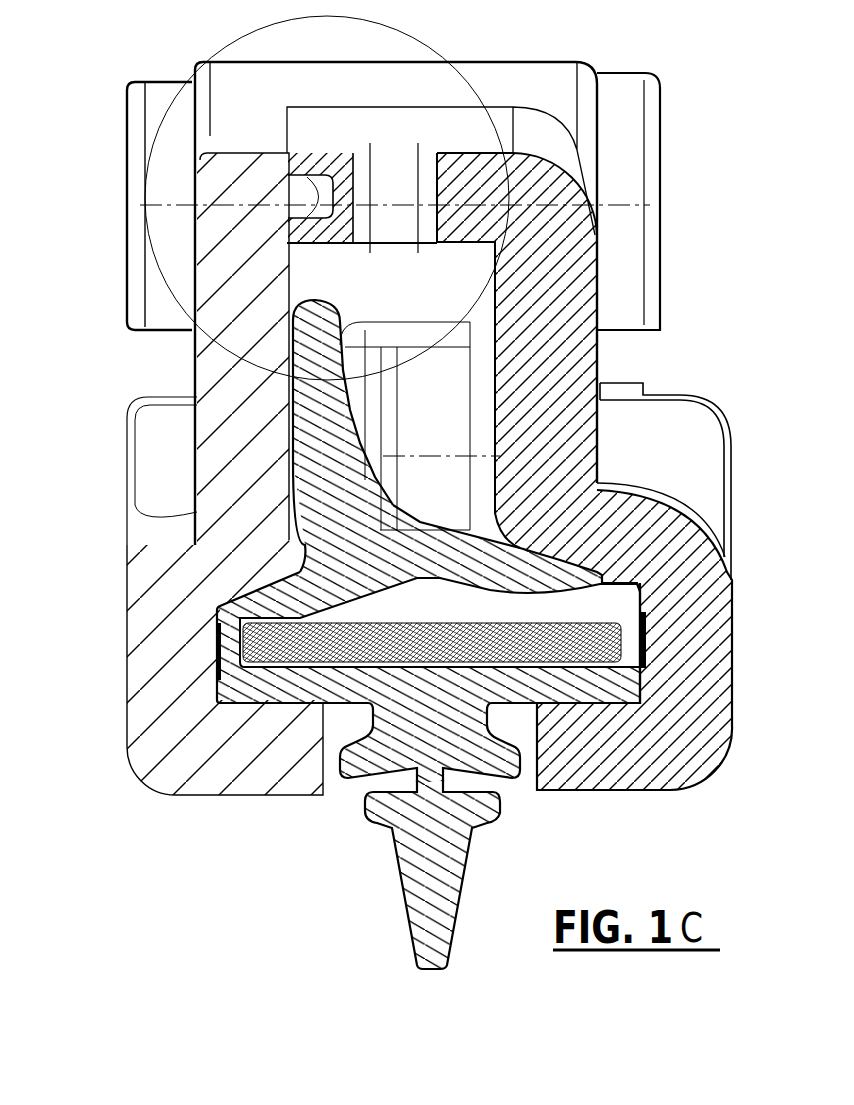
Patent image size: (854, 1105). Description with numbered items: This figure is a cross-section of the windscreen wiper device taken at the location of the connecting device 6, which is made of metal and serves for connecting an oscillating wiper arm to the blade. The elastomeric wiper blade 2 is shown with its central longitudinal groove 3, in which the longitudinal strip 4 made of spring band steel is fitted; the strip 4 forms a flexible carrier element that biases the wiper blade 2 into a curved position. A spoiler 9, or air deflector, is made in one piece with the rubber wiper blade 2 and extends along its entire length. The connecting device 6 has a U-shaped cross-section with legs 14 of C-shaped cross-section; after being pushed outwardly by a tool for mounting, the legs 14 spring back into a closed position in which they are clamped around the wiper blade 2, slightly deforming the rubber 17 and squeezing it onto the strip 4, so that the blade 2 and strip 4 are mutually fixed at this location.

The wiper blade 2 is at (413, 850).
The central longitudinal groove 3 is at (503, 610).
The longitudinal strip 4 is at (728, 572).
The connecting device 6 is at (573, 353).
The spoiler 9 is at (318, 452).
The legs 14 is at (715, 717).
The rubber 17 is at (643, 642).